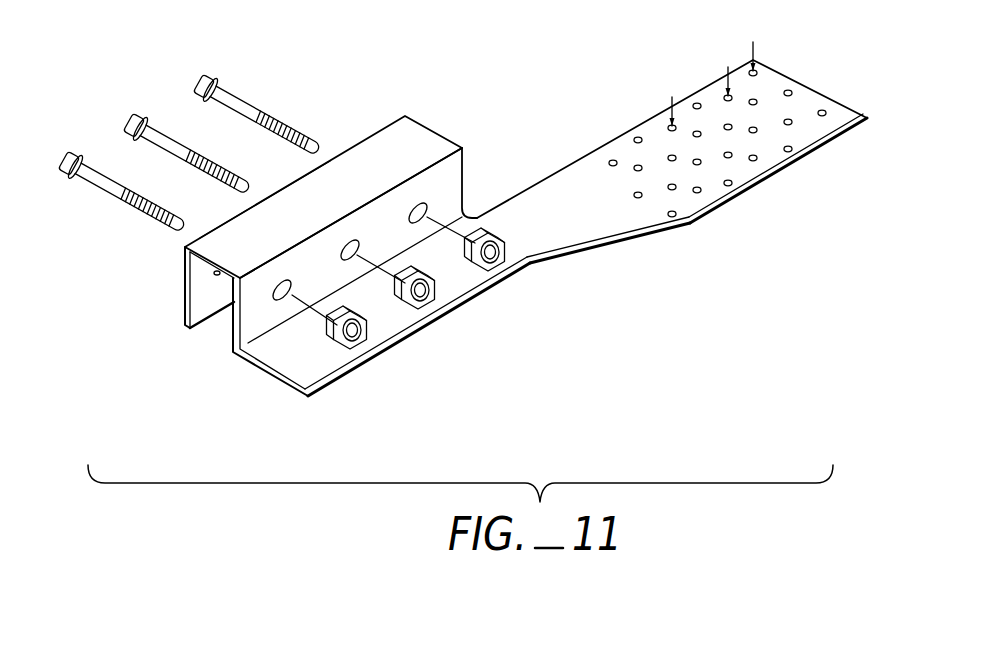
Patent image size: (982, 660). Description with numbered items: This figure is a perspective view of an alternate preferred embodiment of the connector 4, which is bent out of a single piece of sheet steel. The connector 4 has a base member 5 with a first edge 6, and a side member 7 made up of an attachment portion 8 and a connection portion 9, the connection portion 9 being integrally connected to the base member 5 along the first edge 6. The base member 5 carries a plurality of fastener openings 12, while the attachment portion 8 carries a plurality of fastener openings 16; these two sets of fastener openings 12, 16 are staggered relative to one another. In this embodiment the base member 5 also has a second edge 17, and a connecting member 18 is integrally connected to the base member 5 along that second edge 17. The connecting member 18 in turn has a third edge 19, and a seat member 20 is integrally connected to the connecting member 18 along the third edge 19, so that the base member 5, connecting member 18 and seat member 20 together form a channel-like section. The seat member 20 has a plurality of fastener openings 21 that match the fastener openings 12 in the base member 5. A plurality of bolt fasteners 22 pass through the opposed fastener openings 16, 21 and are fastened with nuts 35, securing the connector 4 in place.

The connector 4 is at (558, 146).
The base member 5 is at (467, 188).
The first edge 6 is at (258, 340).
The side member 7 is at (578, 262).
The attachment portion 8 is at (768, 182).
The connection portion 9 is at (312, 373).
The fastener openings 12 is at (410, 216).
The fastener openings 16 is at (757, 160).
The second edge 17 is at (390, 190).
The connecting member 18 is at (412, 128).
The third edge 19 is at (232, 220).
The seat member 20 is at (200, 288).
The fastener openings 21 is at (218, 276).
The bolt fasteners 22 is at (78, 158).
The nuts 35 is at (367, 343).